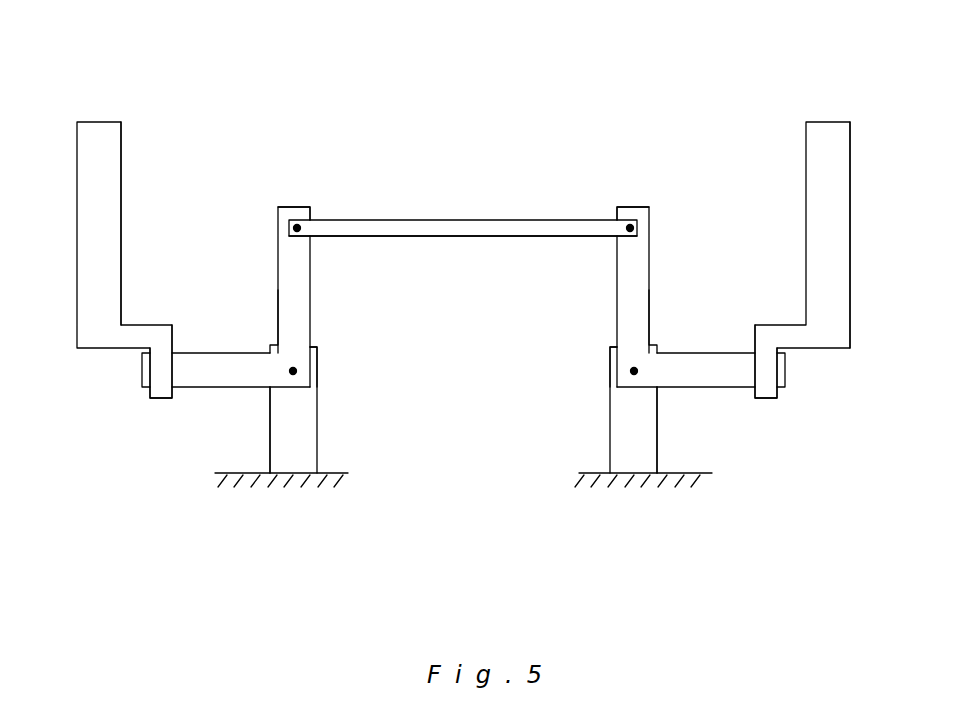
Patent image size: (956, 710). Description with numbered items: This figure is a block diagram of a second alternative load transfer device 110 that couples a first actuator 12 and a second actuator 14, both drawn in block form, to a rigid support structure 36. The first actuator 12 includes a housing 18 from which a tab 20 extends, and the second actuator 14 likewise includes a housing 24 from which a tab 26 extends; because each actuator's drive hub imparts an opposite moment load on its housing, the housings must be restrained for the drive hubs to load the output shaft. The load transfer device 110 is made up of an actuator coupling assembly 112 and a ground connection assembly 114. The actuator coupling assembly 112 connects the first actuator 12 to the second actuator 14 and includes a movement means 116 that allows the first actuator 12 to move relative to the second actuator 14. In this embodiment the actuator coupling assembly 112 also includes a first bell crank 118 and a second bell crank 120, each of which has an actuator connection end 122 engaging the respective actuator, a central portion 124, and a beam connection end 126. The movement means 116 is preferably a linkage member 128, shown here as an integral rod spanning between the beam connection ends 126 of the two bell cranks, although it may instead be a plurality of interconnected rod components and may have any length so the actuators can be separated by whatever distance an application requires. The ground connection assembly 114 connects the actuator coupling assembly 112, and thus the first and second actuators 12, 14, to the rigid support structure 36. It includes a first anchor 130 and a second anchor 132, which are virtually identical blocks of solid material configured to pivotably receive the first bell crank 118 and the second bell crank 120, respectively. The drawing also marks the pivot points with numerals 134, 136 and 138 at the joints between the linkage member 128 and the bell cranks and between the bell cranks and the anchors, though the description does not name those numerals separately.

The load transfer device 110 is at (398, 54).
The first actuator 12 is at (69, 264).
The second actuator 14 is at (858, 319).
The housing 18 is at (122, 183).
The tab 20 is at (118, 349).
The housing 24 is at (850, 178).
The tab 26 is at (797, 350).
The rigid support structure 36 is at (340, 464).
The actuator coupling assembly 112 is at (332, 351).
The ground connection assembly 114 is at (331, 408).
The movement means 116 is at (458, 206).
The first bell crank 118 is at (324, 304).
The second bell crank 120 is at (664, 273).
The actuator connection end 122 is at (197, 357).
The central portion 124 is at (277, 293).
The beam connection end 126 is at (277, 211).
The linkage member 128 is at (510, 237).
The first anchor 130 is at (270, 455).
The second anchor 132 is at (659, 432).
The beam pivot pin 134 is at (297, 226).
The first link pivot 136 is at (293, 371).
The second link pivot 138 is at (634, 371).